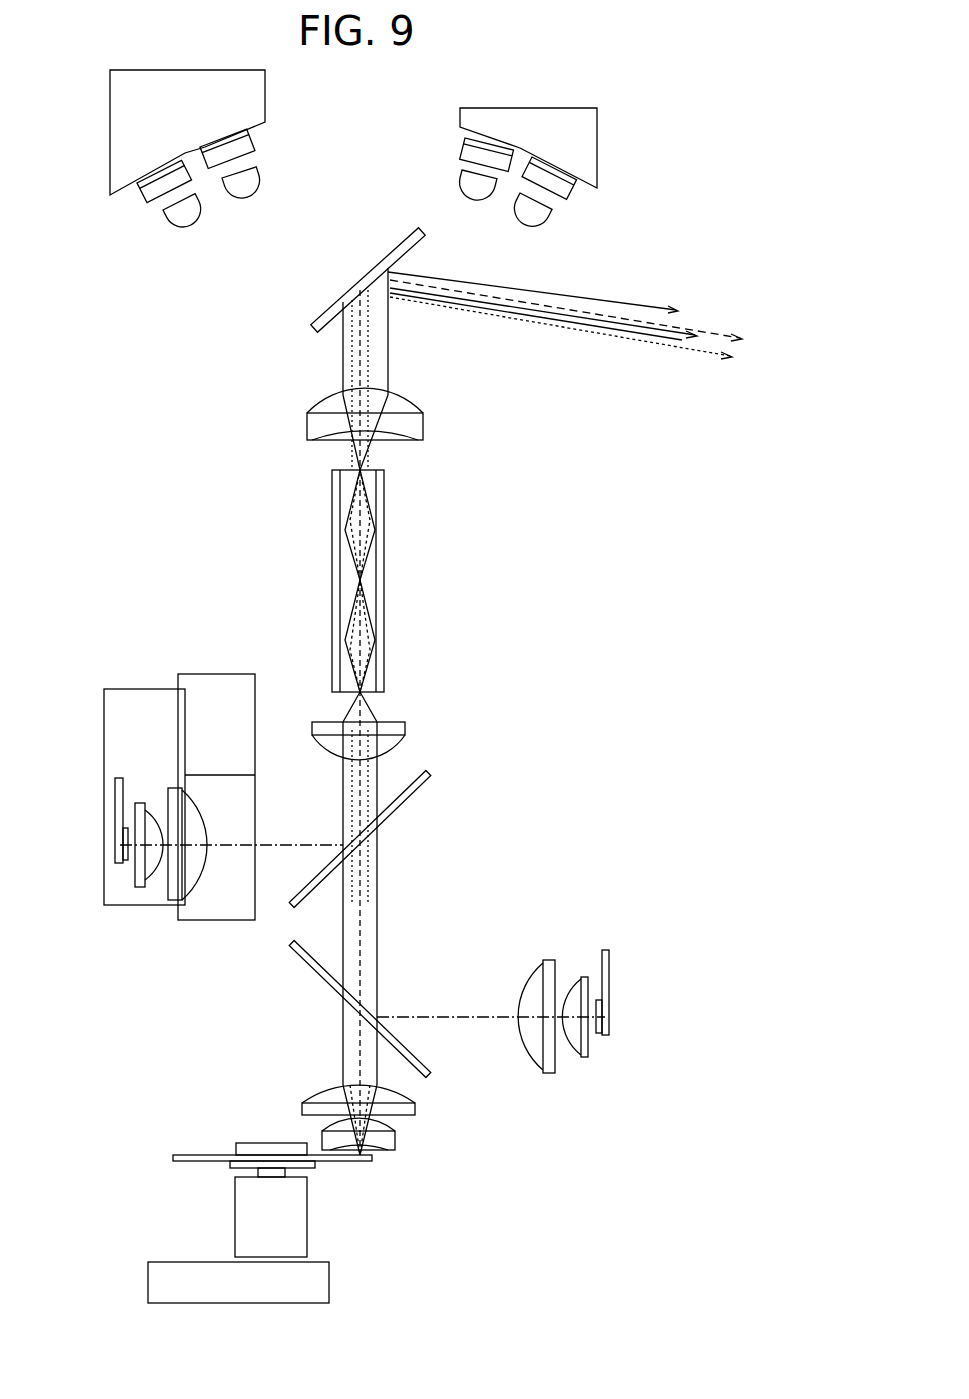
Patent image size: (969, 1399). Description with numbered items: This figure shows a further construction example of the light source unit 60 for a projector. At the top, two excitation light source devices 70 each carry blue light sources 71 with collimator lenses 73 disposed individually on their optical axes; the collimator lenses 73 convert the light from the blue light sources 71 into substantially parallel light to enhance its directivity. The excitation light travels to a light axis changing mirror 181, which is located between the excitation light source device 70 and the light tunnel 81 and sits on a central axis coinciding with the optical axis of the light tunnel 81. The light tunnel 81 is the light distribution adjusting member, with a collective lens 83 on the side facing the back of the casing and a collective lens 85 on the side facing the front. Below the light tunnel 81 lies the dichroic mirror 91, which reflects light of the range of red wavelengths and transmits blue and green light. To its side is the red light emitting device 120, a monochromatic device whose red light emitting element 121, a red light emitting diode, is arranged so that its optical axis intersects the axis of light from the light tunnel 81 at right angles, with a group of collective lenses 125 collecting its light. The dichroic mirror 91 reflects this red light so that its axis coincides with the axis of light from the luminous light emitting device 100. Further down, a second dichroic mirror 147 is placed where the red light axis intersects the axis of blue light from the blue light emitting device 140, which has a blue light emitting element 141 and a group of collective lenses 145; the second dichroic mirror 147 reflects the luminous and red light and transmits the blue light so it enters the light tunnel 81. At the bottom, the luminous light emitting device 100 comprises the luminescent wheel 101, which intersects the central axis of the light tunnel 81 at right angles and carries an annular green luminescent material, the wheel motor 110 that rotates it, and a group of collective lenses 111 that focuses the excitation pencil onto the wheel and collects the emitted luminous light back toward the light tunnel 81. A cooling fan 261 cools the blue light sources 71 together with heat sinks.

The light source unit 60 is at (485, 437).
The excitation light source device 70 is at (272, 99).
The blue light source 71 is at (240, 151).
The collimator lens 73 is at (258, 179).
The light tunnel 81 is at (386, 588).
The collective lens 83 is at (335, 408).
The collective lens 85 is at (385, 742).
The dichroic mirror 91 is at (415, 795).
The luminous light emitting device 100 is at (210, 1182).
The luminescent wheel 101 is at (187, 1157).
The wheel motor 110 is at (253, 1237).
The group of collective lenses 111 is at (405, 1118).
The red light emitting device 120 is at (145, 773).
The red light emitting element 121 is at (120, 846).
The group of collective lenses 125 is at (160, 803).
The blue light emitting device 140 is at (605, 986).
The blue light emitting element 141 is at (604, 1015).
The group of collective lenses 145 is at (563, 970).
The second dichroic mirror 147 is at (408, 1056).
The light axis changing mirror 181 is at (328, 311).
The cooling fan 261 is at (297, 1283).